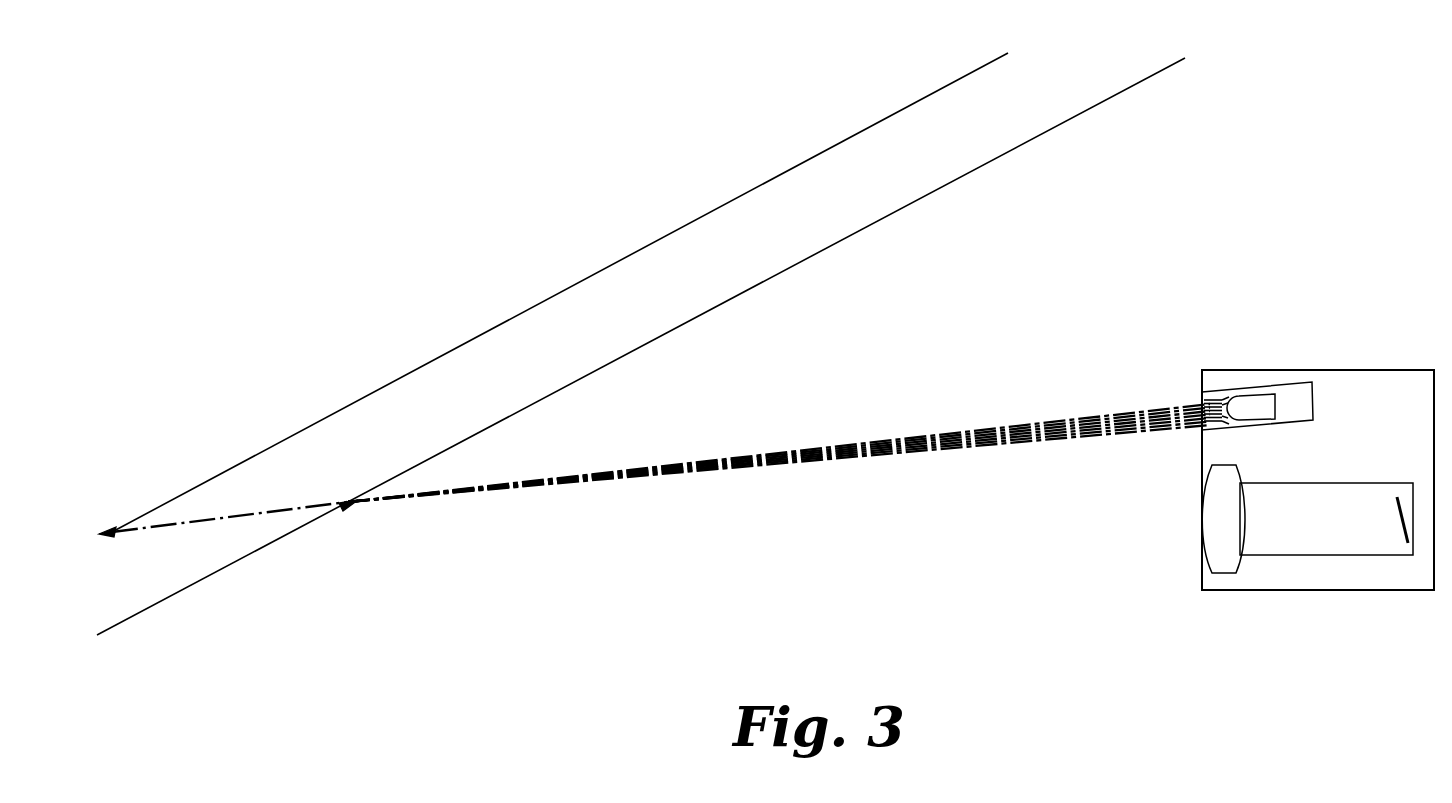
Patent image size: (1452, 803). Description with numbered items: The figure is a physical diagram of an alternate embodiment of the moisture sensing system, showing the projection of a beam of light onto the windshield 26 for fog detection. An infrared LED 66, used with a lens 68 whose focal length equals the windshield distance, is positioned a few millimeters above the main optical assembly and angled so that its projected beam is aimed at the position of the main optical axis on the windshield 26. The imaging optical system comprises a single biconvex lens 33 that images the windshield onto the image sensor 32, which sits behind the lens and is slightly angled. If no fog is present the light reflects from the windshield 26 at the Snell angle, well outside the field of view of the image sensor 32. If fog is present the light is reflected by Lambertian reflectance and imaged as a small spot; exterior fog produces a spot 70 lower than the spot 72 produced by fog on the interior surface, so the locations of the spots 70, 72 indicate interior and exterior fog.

The windshield 26 is at (682, 226).
The image sensor 32 is at (1400, 525).
The biconvex lens 33 is at (1200, 573).
The infrared LED 66 is at (1258, 408).
The lens 68 is at (1199, 420).
The spot 70 is at (113, 535).
The spot 72 is at (346, 505).